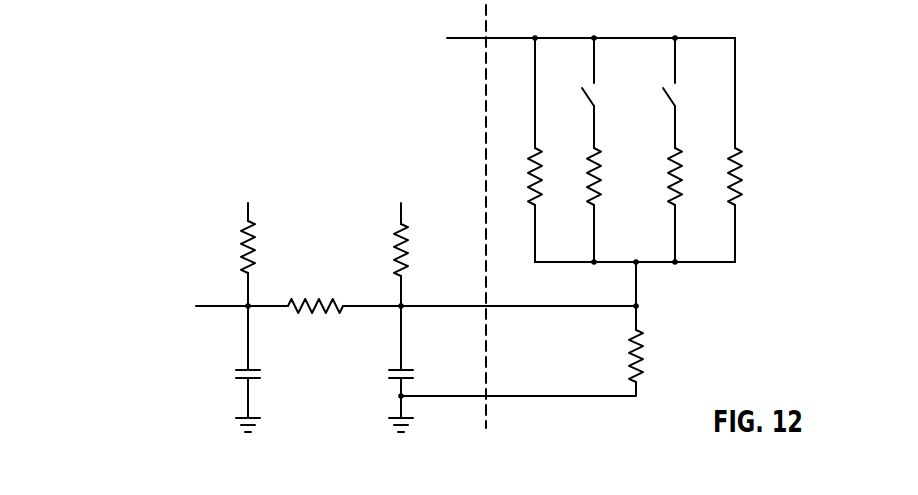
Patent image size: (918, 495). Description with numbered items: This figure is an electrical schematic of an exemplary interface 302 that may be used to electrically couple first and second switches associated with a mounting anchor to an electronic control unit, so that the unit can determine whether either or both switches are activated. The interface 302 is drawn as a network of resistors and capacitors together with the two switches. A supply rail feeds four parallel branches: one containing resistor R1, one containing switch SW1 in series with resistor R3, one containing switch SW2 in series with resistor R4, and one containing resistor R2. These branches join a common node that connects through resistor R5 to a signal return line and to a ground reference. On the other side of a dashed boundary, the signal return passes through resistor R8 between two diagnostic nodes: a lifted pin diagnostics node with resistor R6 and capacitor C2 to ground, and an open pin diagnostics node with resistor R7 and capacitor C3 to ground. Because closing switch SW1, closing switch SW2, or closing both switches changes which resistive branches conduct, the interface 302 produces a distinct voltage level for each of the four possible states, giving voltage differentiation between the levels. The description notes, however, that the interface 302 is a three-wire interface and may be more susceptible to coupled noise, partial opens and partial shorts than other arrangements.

The interface 302 is at (128, 170).
The resistor R1 is at (550, 150).
The resistor R2 is at (751, 150).
The resistor R3 is at (610, 184).
The resistor R4 is at (691, 184).
The resistor R5 is at (538, 329).
The resistor R6 is at (262, 254).
The resistor R7 is at (415, 254).
The resistor R8 is at (315, 294).
The capacitor C2 is at (263, 362).
The capacitor C3 is at (415, 362).
The switch SW1 is at (613, 73).
The switch SW2 is at (694, 73).